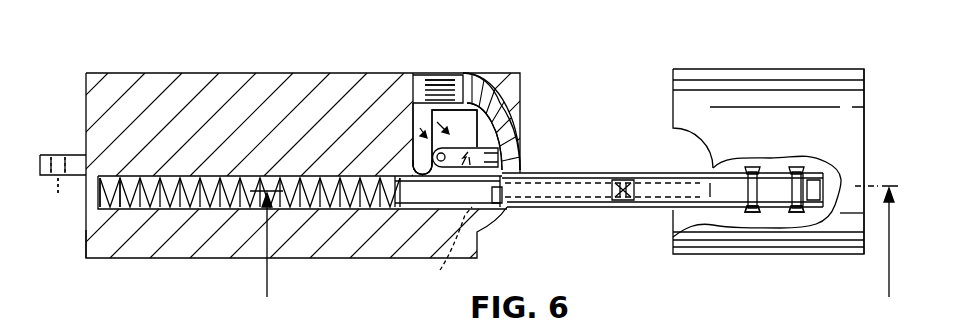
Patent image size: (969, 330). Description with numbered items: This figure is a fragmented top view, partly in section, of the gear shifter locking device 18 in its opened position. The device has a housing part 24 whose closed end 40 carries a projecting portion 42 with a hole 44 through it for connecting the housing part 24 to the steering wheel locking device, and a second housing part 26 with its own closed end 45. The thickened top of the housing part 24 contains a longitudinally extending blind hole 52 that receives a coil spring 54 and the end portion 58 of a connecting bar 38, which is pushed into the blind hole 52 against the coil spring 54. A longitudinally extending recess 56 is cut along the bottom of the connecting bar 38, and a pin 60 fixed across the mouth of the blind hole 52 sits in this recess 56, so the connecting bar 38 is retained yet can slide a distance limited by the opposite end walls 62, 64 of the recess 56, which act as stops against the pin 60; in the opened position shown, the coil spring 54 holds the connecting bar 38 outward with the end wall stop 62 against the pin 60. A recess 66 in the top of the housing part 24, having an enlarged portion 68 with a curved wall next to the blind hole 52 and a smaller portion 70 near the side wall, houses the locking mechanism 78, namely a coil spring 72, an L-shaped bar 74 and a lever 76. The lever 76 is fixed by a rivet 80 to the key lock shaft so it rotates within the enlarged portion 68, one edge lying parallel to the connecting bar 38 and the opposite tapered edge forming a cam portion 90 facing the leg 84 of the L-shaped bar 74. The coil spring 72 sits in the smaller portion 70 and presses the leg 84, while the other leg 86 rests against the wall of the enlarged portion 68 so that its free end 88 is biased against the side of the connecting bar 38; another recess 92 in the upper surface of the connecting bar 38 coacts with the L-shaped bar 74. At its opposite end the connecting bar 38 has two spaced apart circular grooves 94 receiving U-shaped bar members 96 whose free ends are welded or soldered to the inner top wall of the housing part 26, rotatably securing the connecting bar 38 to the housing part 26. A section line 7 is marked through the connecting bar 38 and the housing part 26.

The section line 7- 7 is at (574, 255).
The gear shifter locking device 18 is at (565, 111).
The housing part 24 is at (188, 80).
The housing part 26 is at (743, 83).
The connecting bar 38 is at (565, 174).
The closed end 40 is at (88, 238).
The projecting portion 42 is at (78, 155).
The hole 44 is at (64, 204).
The closed end 45 is at (866, 127).
The blind hole 52 is at (183, 200).
The coil spring 54 is at (135, 197).
The recess 56 is at (563, 208).
The end portion 58 is at (405, 198).
The pin 60 is at (525, 207).
The end wall 62 is at (438, 248).
The end wall 64 is at (715, 212).
The recess 66 is at (432, 110).
The enlarged portion 68 is at (506, 116).
The smaller portion 70 is at (466, 82).
The coil spring 72 is at (437, 78).
The L-shaped bar 74 is at (480, 101).
The lever 76 is at (498, 157).
The locking mechanism 78 is at (424, 136).
The rivet 80 is at (432, 157).
The leg 84 is at (427, 74).
The leg 86 is at (428, 168).
The free end 88 is at (420, 178).
The cam portion 90 is at (477, 128).
The recess 92 is at (627, 178).
The circular grooves 94 is at (792, 190).
The U-shaped bar members 96 is at (795, 212).